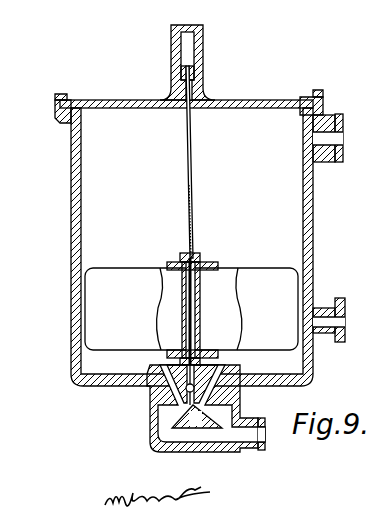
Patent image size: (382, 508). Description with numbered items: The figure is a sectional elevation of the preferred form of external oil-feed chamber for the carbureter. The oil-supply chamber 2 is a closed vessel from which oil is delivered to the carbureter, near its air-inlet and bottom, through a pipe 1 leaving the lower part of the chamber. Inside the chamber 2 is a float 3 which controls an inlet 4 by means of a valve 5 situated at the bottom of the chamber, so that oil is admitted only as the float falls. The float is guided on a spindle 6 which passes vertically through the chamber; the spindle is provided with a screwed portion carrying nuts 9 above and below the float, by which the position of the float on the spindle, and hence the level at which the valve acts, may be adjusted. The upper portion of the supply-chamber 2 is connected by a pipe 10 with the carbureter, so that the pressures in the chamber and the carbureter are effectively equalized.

The pipe 1 is at (327, 322).
The oil-supply chamber 2 is at (192, 241).
The float 3 is at (191, 309).
The inlet 4 is at (170, 397).
The valve 5 is at (197, 416).
The spindle 6 is at (192, 202).
The nuts 9 is at (200, 257).
The pipe 10 is at (328, 138).